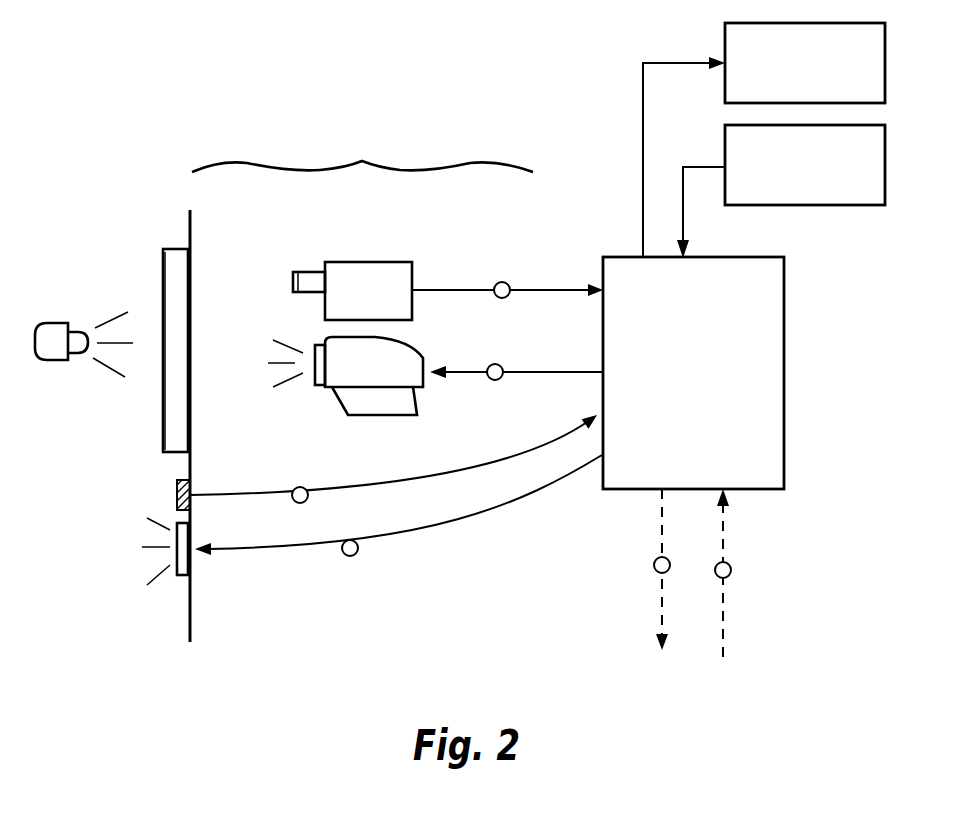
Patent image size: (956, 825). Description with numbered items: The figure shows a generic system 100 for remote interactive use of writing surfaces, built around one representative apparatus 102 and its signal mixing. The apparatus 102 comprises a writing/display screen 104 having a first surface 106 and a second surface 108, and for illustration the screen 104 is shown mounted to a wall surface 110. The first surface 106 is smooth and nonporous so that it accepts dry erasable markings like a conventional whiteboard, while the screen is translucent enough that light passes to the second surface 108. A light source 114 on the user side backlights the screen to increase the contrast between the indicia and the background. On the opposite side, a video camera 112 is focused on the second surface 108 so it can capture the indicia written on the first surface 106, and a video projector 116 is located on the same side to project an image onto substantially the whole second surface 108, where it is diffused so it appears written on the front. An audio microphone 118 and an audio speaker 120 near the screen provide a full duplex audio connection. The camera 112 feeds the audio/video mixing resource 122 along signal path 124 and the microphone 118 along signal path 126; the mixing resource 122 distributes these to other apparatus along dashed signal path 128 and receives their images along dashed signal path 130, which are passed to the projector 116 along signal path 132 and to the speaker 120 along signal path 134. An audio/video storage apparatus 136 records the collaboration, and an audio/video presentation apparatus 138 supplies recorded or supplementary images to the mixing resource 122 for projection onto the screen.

The system 100 is at (228, 683).
The apparatus 102 is at (362, 151).
The writing/display screen 104 is at (178, 248).
The first surface 106 is at (165, 433).
The second surface 108 is at (193, 400).
The wall surface 110 is at (191, 607).
The video camera 112 is at (382, 262).
The light source 114 is at (68, 325).
The video projector 116 is at (393, 417).
The audio microphone 118 is at (177, 495).
The audio speaker 120 is at (182, 580).
The audio/video mixing resource 122 is at (785, 348).
The signal path 124 is at (502, 282).
The signal path 126 is at (300, 483).
The signal path 128 is at (654, 570).
The signal path 130 is at (731, 573).
The signal path 132 is at (493, 380).
The signal path 134 is at (350, 556).
The audio/video storage apparatus 136 is at (725, 40).
The audio/video presentation apparatus 138 is at (810, 205).